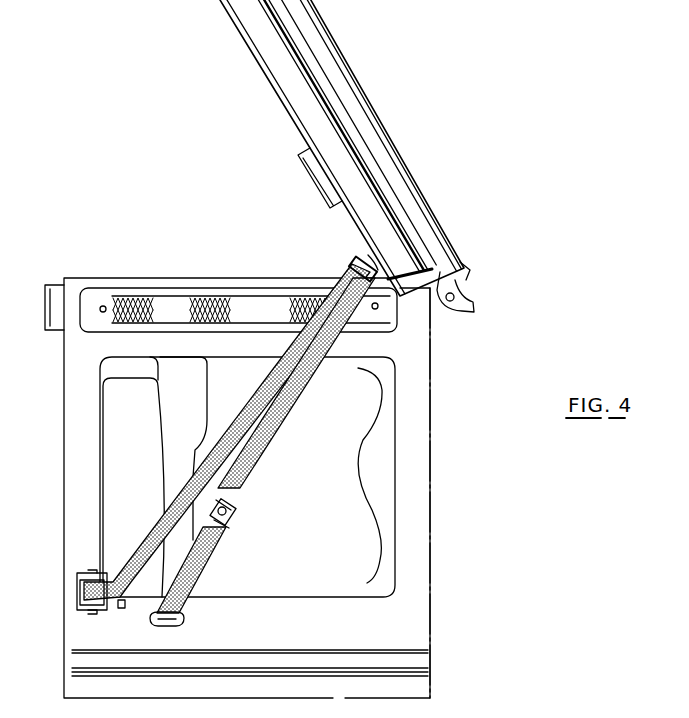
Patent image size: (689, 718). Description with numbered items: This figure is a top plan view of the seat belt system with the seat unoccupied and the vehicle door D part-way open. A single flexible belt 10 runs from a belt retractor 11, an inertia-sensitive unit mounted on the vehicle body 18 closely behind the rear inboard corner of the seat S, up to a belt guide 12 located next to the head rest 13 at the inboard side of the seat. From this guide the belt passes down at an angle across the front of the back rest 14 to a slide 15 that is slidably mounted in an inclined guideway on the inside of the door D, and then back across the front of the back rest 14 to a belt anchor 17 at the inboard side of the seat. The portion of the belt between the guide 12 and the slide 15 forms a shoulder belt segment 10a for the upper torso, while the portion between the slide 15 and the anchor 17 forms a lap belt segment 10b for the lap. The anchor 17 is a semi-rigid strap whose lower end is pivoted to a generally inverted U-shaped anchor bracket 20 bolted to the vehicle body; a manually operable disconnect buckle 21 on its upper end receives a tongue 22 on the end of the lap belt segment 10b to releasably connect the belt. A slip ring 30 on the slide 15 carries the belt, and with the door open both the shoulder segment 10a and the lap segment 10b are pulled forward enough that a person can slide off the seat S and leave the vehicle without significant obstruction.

The flexible belt 10 is at (93, 603).
The shoulder belt segment 10a is at (260, 398).
The lap belt segment 10b is at (300, 392).
The belt retractor 11 is at (80, 573).
The belt guide 12 is at (118, 607).
The head rest 13 is at (138, 455).
The back rest 14 is at (197, 415).
The slide 15 is at (368, 255).
The belt anchor 17 is at (227, 432).
The vehicle body 18 is at (422, 632).
The anchor bracket 20 is at (182, 622).
The disconnect buckle 21 is at (235, 522).
The tongue 22 is at (237, 506).
The slip ring 30 is at (353, 263).
The vehicle door D is at (407, 184).
The seat S is at (382, 580).